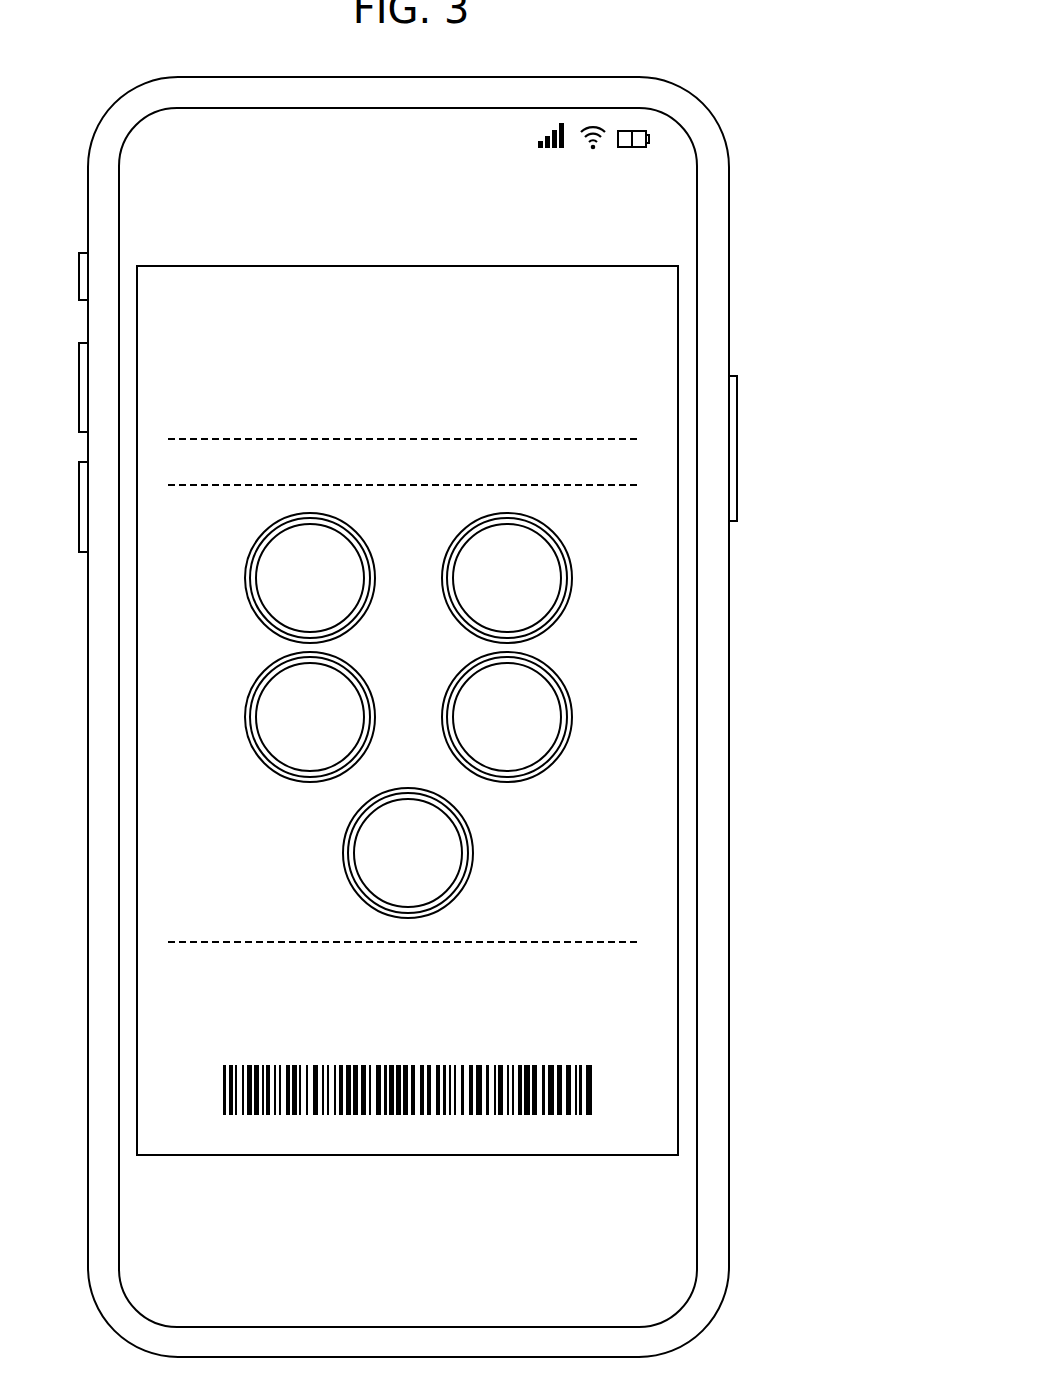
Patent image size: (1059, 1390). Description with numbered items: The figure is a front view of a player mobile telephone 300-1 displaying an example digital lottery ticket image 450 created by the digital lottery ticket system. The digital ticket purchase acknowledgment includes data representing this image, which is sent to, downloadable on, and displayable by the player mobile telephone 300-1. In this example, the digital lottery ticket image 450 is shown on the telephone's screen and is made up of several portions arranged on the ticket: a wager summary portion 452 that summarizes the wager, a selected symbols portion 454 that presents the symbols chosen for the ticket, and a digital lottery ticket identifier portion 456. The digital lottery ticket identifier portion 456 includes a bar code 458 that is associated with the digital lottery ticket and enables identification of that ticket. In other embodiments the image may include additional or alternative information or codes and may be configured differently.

The player mobile telephone 300-1 is at (744, 122).
The digital lottery ticket image 450 is at (579, 258).
The wager summary portion 452 is at (152, 459).
The selected symbols portion 454 is at (188, 643).
The digital lottery ticket identifier portion 456 is at (152, 1031).
The bar code 458 is at (620, 1092).